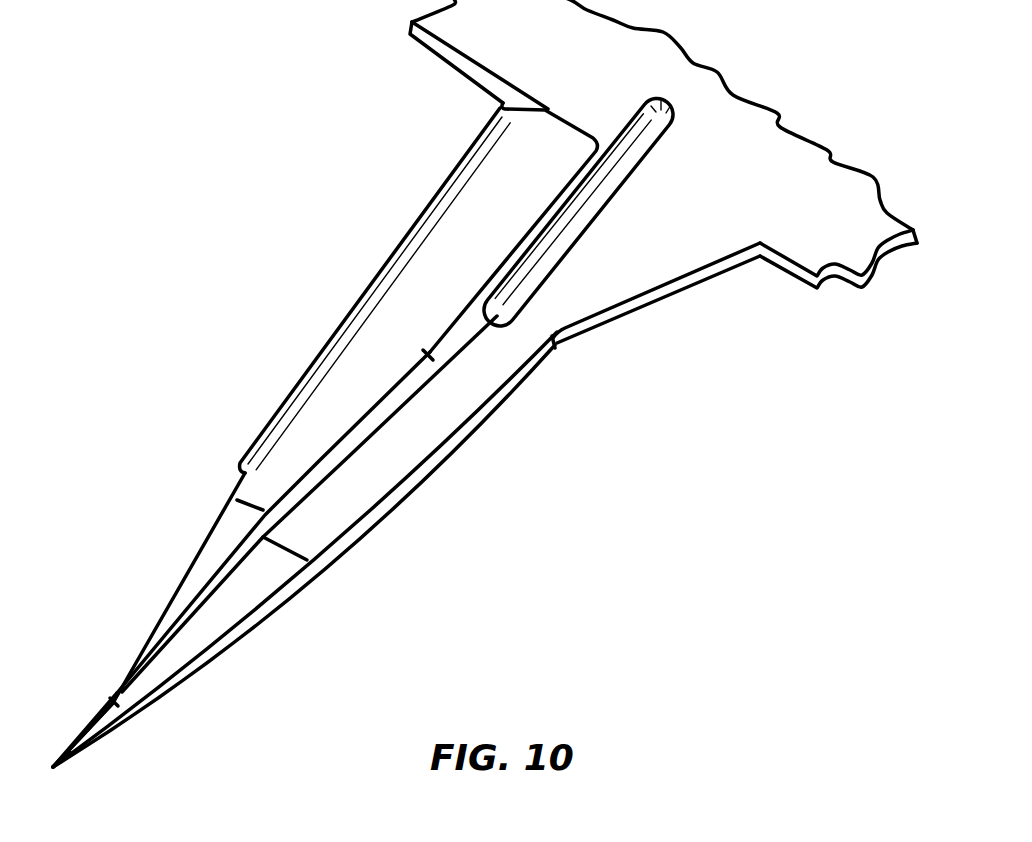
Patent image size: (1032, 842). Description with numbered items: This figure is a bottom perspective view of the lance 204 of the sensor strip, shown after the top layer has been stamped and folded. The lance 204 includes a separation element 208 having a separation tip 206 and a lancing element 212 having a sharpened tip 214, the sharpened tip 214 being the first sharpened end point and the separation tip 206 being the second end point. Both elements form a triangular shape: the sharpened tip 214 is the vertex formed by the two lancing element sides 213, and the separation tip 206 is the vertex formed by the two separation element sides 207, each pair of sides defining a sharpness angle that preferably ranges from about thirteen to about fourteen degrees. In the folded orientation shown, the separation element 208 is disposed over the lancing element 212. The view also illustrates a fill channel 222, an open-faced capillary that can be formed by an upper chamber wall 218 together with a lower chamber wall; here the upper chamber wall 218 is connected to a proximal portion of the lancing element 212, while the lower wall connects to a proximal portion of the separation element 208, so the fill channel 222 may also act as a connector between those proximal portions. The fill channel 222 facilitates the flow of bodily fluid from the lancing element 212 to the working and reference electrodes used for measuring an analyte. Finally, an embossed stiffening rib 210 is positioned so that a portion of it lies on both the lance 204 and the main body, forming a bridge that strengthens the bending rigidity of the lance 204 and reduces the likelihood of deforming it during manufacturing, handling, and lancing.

The lance 204 is at (262, 290).
The separation tip 206 is at (115, 700).
The separation element sides 207 is at (185, 608).
The separation element 208 is at (203, 560).
The stiffening rib 210 is at (580, 245).
The lancing element 212 is at (173, 650).
The lancing element sides 213 is at (90, 717).
The sharpened tip 214 is at (57, 773).
The upper chamber wall 218 is at (473, 374).
The fill channel 222 is at (400, 437).